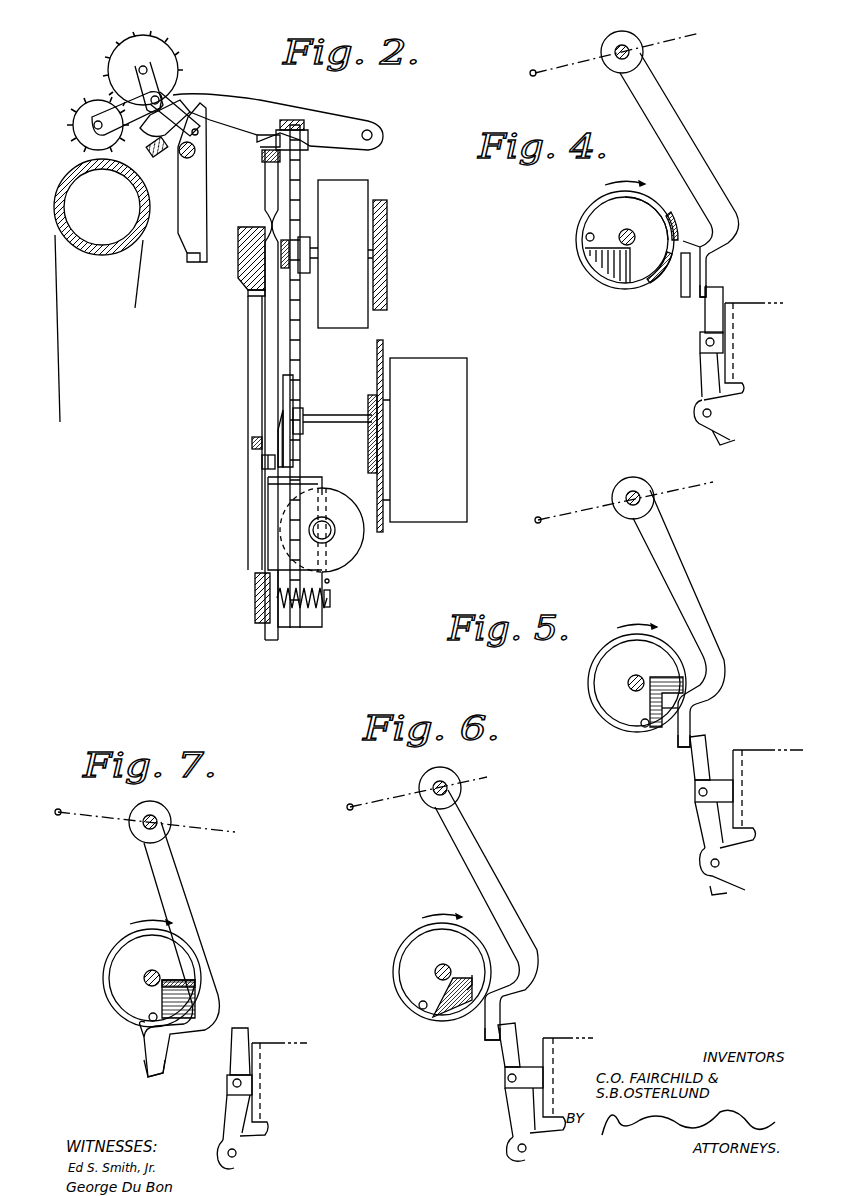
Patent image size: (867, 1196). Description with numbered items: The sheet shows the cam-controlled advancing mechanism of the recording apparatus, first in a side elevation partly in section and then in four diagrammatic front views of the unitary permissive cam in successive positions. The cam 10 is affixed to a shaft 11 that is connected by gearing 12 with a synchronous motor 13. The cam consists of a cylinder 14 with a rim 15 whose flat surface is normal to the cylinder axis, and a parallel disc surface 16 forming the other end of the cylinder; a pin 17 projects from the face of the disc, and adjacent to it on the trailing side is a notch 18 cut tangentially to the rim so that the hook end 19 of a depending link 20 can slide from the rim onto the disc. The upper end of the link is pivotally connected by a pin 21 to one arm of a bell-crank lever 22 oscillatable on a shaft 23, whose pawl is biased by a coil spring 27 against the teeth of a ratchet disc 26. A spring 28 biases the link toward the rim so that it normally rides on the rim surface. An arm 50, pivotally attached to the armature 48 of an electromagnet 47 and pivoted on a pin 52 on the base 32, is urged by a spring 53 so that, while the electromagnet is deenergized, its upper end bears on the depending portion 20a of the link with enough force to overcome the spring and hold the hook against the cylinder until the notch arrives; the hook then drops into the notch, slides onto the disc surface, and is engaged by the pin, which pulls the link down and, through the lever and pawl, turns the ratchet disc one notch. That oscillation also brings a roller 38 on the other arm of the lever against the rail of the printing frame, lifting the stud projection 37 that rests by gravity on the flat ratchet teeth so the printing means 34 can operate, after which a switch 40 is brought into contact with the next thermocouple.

In FIG. 2, the cam 10 is at (300, 392).
In FIG. 2, the shaft 11 is at (335, 425).
In FIG. 4, the shaft 11 is at (630, 231).
In FIG. 5, the shaft 11 is at (635, 676).
In FIG. 6, the shaft 11 is at (444, 964).
In FIG. 7, the shaft 11 is at (150, 970).
In FIG. 2, the gearing 12 is at (372, 392).
In FIG. 2, the synchronous motor 13 is at (455, 406).
In FIG. 4, the cylinder 14 is at (676, 216).
In FIG. 4, the rim 15 is at (659, 200).
In FIG. 4, the disc surface 16 is at (597, 212).
In FIG. 5, the disc surface 16 is at (598, 683).
In FIG. 6, the disc surface 16 is at (408, 946).
In FIG. 7, the disc surface 16 is at (123, 990).
In FIG. 2, the pin 17 is at (258, 450).
In FIG. 4, the pin 17 is at (586, 248).
In FIG. 5, the pin 17 is at (643, 727).
In FIG. 6, the pin 17 is at (424, 1012).
In FIG. 7, the pin 17 is at (150, 1022).
In FIG. 2, the notch 18 is at (270, 464).
In FIG. 4, the notch 18 is at (616, 276).
In FIG. 5, the notch 18 is at (690, 688).
In FIG. 6, the notch 18 is at (452, 997).
In FIG. 7, the notch 18 is at (197, 988).
In FIG. 4, the hook end 19 is at (679, 262).
In FIG. 5, the hook end 19 is at (668, 676).
In FIG. 6, the hook end 19 is at (474, 978).
In FIG. 7, the hook end 19 is at (142, 1045).
In FIG. 2, the link 20 is at (272, 353).
In FIG. 4, the link 20 is at (690, 118).
In FIG. 5, the link 20 is at (655, 556).
In FIG. 6, the link 20 is at (488, 842).
In FIG. 7, the link 20 is at (185, 884).
In FIG. 4, the depending portion 20a is at (698, 300).
In FIG. 5, the depending portion 20a is at (692, 724).
In FIG. 6, the depending portion 20a is at (501, 1010).
In FIG. 7, the depending portion 20a is at (164, 1070).
In FIG. 4, the pin 21 is at (628, 48).
In FIG. 5, the pin 21 is at (640, 492).
In FIG. 6, the pin 21 is at (447, 784).
In FIG. 7, the pin 21 is at (162, 820).
In FIG. 2, the bell-crank lever 22 is at (263, 256).
In FIG. 4, the bell-crank lever 22 is at (575, 63).
In FIG. 5, the bell-crank lever 22 is at (592, 508).
In FIG. 6, the bell-crank lever 22 is at (388, 798).
In FIG. 7, the bell-crank lever 22 is at (106, 818).
In FIG. 2, the shaft 23 is at (312, 276).
In FIG. 2, the ratchet disc 26 is at (300, 176).
In FIG. 2, the coil spring 27 is at (288, 240).
In FIG. 2, the spring 28 is at (263, 282).
In FIG. 2, the base 32 is at (256, 530).
In FIG. 2, the printing means 34 is at (100, 78).
In FIG. 2, the stud projection 37 is at (306, 146).
In FIG. 2, the roller 38 is at (262, 158).
In FIG. 2, the switch 40 is at (370, 188).
In FIG. 2, the electromagnet 47 is at (350, 550).
In FIG. 2, the armature 48 is at (325, 527).
In FIG. 2, the arm 50 is at (326, 629).
In FIG. 4, the arm 50 is at (716, 288).
In FIG. 5, the arm 50 is at (700, 757).
In FIG. 6, the arm 50 is at (507, 1046).
In FIG. 7, the arm 50 is at (246, 1030).
In FIG. 2, the pin 52 is at (331, 603).
In FIG. 2, the spring 53 is at (330, 582).